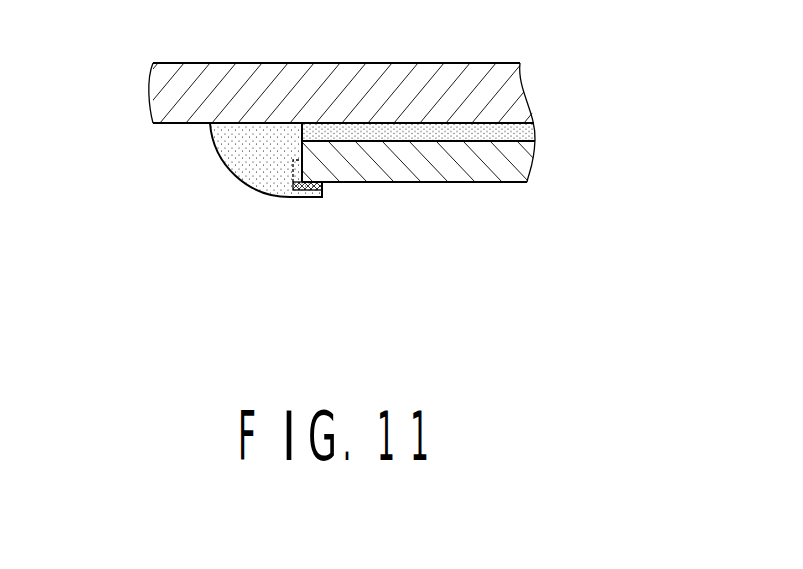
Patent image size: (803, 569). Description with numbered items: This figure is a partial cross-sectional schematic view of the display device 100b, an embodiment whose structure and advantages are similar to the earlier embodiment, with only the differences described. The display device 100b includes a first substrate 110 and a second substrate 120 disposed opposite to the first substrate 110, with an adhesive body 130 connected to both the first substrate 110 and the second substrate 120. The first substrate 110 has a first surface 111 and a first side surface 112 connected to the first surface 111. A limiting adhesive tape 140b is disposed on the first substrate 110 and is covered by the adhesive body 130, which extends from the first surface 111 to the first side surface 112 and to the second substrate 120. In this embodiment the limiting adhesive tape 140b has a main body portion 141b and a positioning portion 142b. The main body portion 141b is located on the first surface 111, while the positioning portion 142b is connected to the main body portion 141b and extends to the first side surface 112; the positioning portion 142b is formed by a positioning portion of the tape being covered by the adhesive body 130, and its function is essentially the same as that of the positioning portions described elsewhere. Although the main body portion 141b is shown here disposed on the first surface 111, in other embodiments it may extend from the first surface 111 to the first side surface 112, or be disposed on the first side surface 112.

The display device 100b is at (123, 26).
The first substrate 110 is at (513, 162).
The first surface 111 is at (182, 132).
The first side surface 112 is at (302, 150).
The second substrate 120 is at (495, 93).
The adhesive body 130 is at (250, 160).
The limiting adhesive tape 140b is at (396, 218).
The main body portion 141b is at (309, 196).
The positioning portion 142b is at (304, 167).